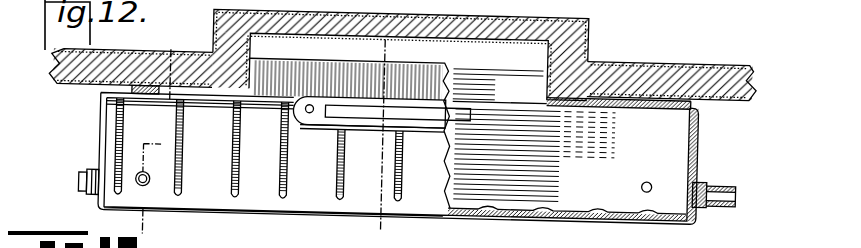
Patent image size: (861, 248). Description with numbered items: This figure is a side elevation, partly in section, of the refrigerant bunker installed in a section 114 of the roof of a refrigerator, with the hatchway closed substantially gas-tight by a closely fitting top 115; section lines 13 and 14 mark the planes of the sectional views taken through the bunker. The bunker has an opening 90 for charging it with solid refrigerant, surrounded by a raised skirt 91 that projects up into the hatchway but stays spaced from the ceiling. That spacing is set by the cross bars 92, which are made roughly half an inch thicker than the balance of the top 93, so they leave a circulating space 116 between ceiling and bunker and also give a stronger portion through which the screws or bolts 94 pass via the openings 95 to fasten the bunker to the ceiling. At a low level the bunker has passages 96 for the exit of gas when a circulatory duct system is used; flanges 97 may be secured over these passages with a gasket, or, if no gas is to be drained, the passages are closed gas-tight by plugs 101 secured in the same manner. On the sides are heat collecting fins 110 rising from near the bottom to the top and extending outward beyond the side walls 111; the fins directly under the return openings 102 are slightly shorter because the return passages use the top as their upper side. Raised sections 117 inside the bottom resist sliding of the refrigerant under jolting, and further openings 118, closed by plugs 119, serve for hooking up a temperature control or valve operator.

The section line 13- 13 is at (163, 79).
The section line 14- 14 is at (126, 229).
The opening 90 is at (464, 70).
The raised edges or skirt 91 is at (545, 80).
The cross bars 92 is at (143, 92).
The top 93 is at (200, 105).
The screws or bolts 94 is at (145, 108).
The openings 95 is at (640, 102).
The passages 96 is at (694, 190).
The flanges 97 is at (725, 199).
The plugs 101 is at (81, 202).
The return openings 102 is at (372, 119).
The heat collecting fins or extensions 110 is at (340, 176).
The side walls 111 is at (120, 154).
The section of the roof 114 is at (658, 76).
The closely fitting top 115 is at (585, 27).
The circulating space 116 is at (596, 93).
The raised sections 117 is at (582, 210).
The openings 118 is at (645, 176).
The plugs 119 is at (144, 193).